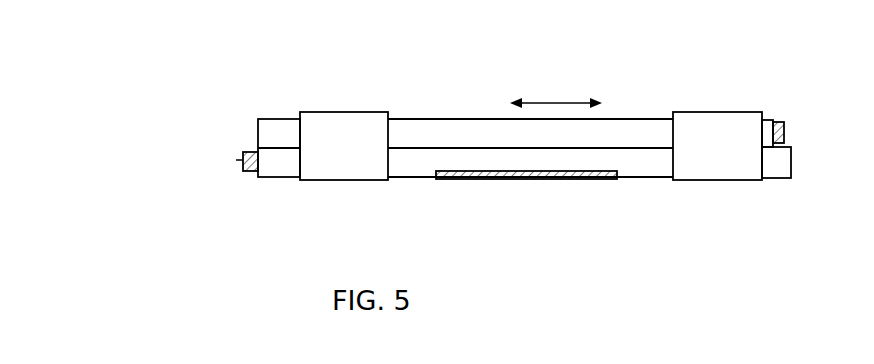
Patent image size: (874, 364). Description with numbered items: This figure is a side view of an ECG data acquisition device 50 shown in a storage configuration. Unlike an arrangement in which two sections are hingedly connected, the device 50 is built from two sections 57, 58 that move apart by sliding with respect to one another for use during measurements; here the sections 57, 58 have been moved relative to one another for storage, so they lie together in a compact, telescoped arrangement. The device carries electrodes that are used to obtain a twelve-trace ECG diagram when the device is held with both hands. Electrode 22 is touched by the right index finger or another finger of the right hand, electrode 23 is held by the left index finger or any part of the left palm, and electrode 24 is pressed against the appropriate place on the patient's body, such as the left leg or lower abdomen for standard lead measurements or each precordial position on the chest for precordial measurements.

The ECG data acquisition device 50 is at (78, 76).
The section 57 is at (483, 132).
The section 58 is at (422, 165).
The electrode 22 is at (557, 178).
The electrode 23 is at (243, 161).
The electrode 24 is at (783, 122).